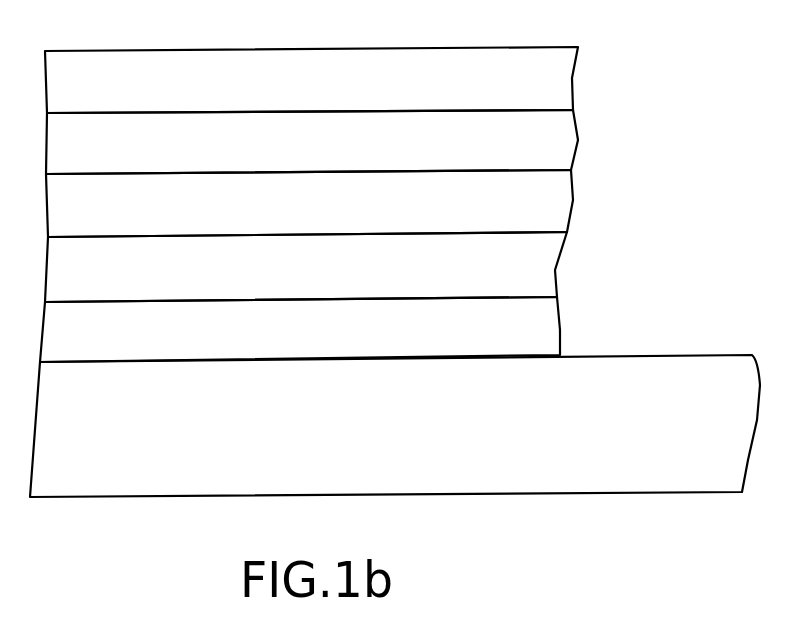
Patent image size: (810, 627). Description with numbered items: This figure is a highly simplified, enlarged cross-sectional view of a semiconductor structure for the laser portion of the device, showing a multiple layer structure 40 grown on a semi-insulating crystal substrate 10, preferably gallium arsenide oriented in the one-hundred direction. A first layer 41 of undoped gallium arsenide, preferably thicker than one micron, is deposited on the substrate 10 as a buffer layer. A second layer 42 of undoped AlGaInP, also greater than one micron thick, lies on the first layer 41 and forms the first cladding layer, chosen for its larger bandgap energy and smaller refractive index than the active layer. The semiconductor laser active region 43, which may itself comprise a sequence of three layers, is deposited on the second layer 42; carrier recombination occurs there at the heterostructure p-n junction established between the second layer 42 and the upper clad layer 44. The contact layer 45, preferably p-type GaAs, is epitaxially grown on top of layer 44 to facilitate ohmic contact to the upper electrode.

The substrate 10 is at (452, 431).
The multiple layer structure 40 is at (384, 189).
The first layer 41 is at (334, 329).
The second layer 42 is at (552, 270).
The semiconductor laser active region 43 is at (572, 205).
The upper clad layer 44 is at (567, 142).
The contact layer 45 is at (568, 78).